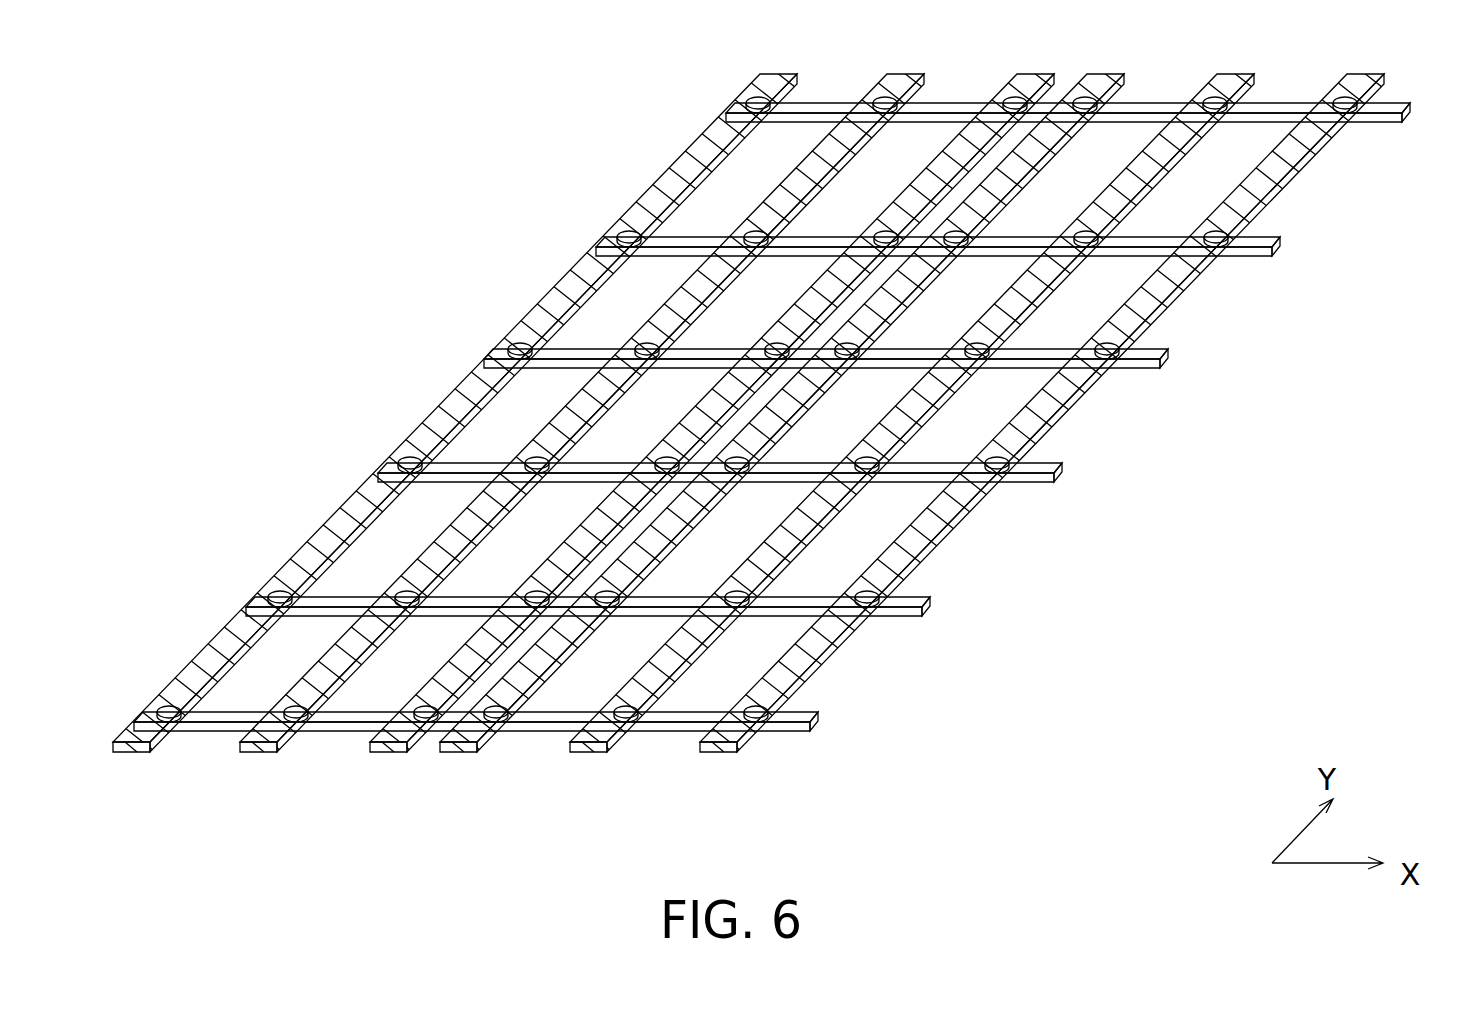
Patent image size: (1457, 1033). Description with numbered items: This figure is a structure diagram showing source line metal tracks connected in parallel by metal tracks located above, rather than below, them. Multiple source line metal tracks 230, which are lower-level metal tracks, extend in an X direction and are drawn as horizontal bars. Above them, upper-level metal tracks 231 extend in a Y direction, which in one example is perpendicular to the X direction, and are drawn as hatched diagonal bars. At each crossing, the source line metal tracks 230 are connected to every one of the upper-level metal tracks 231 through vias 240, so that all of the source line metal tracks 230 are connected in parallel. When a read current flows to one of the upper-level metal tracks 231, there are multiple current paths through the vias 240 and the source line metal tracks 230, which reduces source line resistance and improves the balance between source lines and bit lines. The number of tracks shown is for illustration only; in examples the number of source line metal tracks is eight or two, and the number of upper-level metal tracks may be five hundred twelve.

The source line metal tracks 230 is at (1411, 111).
The metal tracks M1 231 is at (773, 77).
The vias V0 240 is at (772, 720).